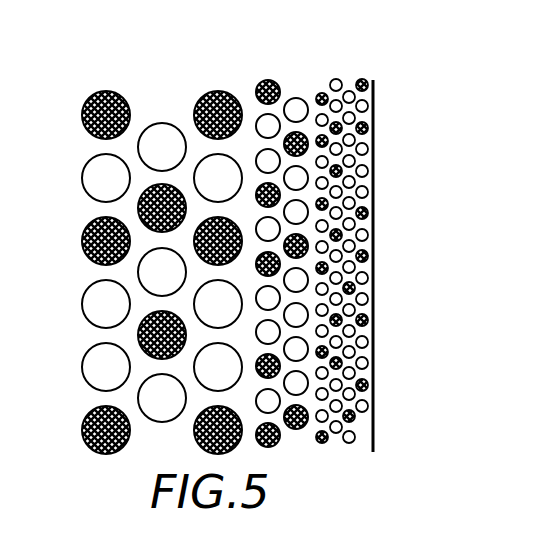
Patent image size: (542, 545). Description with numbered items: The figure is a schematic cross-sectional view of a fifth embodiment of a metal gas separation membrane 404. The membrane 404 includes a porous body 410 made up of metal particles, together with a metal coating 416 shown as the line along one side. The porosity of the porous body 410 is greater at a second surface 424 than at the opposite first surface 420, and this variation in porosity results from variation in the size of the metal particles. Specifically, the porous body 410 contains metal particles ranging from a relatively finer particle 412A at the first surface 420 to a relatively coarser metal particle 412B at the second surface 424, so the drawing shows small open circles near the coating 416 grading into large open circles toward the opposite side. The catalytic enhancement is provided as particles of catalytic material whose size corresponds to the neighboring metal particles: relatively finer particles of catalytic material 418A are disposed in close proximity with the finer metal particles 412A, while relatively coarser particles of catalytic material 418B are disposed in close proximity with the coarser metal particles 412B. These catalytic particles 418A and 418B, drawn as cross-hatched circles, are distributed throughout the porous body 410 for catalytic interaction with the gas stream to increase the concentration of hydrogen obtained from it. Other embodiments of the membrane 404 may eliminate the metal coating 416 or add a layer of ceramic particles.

The metal gas separation membrane 404 is at (165, 84).
The porous body 410 is at (238, 97).
The relatively finer particles of catalytic material 418A is at (362, 84).
The metal coating 416 is at (374, 140).
The relatively finer particle 412A is at (366, 152).
The first surface 420 is at (369, 247).
The relatively coarser metal particle 412B is at (84, 191).
The relatively coarser particles of catalytic material 418B is at (83, 245).
The second surface 424 is at (92, 401).